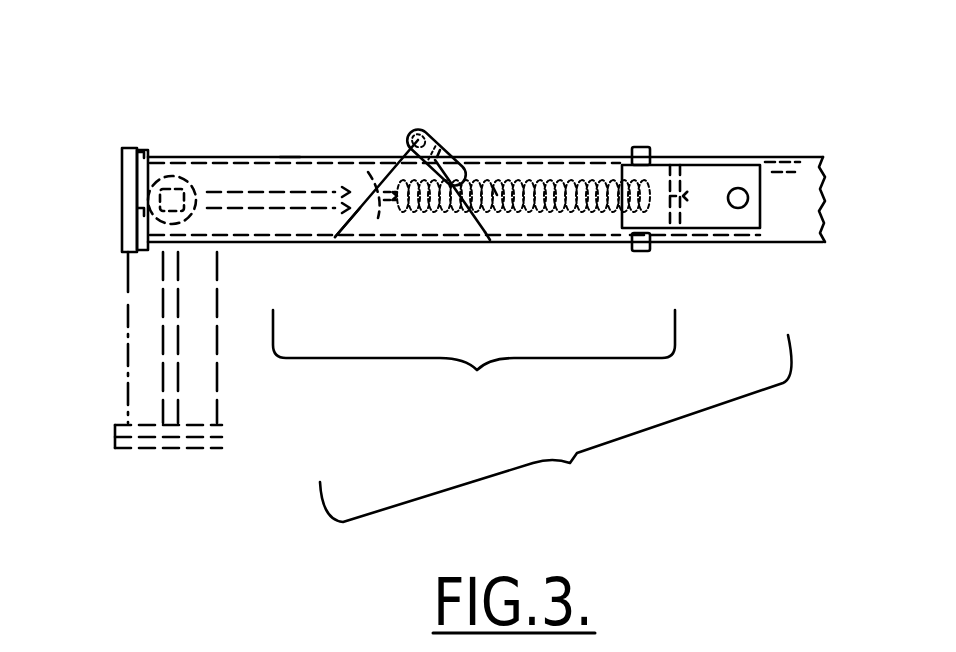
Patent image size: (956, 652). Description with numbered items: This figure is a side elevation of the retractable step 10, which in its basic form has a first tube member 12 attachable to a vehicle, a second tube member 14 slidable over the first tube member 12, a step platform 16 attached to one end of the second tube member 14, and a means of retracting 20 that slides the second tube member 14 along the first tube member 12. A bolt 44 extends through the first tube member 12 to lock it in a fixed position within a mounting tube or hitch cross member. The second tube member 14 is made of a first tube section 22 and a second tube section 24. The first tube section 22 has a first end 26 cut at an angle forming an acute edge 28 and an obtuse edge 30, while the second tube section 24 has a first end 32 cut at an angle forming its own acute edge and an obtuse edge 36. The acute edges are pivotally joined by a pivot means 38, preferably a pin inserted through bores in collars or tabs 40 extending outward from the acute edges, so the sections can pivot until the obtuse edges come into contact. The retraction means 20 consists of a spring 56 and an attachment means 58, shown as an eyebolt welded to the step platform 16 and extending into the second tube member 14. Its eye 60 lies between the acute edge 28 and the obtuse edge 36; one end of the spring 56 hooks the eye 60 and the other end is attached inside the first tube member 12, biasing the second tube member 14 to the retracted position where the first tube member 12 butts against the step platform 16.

The retractable step 10 is at (556, 428).
The first tube member 12 is at (432, 232).
The second tube member 14 is at (474, 368).
The step platform 16 is at (128, 182).
The means of retracting 20 is at (543, 182).
The first tube section 22 is at (597, 157).
The second tube section 24 is at (280, 157).
The first end 26 is at (485, 232).
The acute edge 28 is at (408, 150).
The obtuse edge 30 is at (485, 232).
The first end 32 is at (372, 178).
The obtuse edge 36 is at (335, 237).
The pivot means 38 is at (428, 122).
The collars or tabs 40 is at (437, 157).
The bolt 44 is at (745, 190).
The spring 56 is at (493, 187).
The attachment means 58 is at (172, 305).
The eye 60 is at (182, 170).